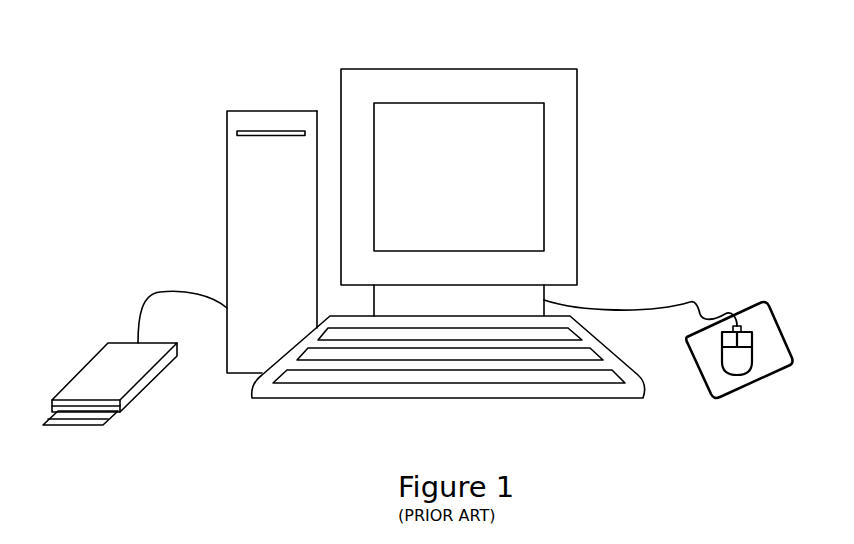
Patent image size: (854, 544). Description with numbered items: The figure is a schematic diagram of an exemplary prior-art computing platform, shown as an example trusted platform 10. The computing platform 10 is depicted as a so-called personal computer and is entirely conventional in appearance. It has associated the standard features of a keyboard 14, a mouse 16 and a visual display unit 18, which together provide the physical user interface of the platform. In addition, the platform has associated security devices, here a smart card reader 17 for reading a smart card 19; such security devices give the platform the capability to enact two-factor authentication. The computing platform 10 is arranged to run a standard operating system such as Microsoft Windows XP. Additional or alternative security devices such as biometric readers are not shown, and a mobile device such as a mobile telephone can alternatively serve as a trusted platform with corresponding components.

The trusted platform 10 is at (217, 390).
The keyboard 14 is at (595, 400).
The mouse 16 is at (743, 300).
The smart card reader 17 is at (98, 351).
The visual display unit 18 is at (583, 176).
The smart card 19 is at (80, 428).